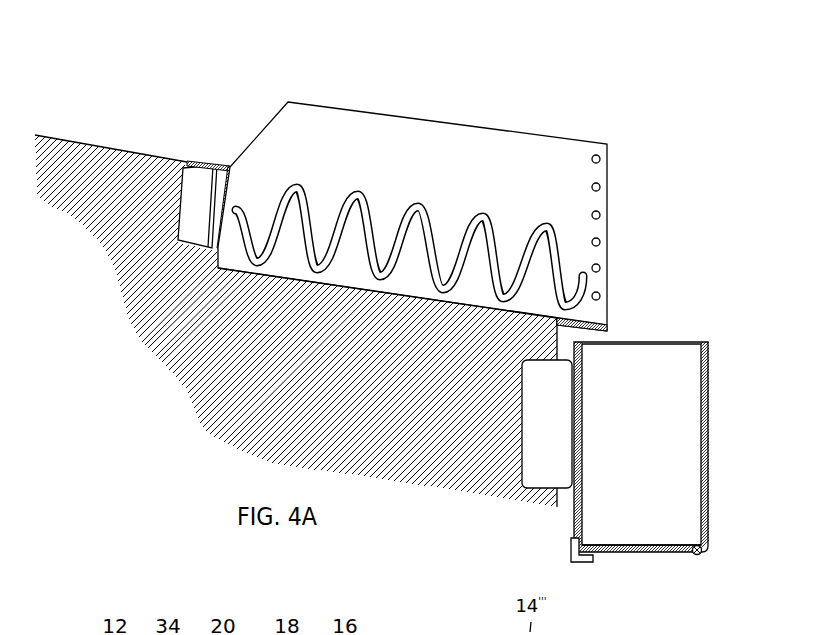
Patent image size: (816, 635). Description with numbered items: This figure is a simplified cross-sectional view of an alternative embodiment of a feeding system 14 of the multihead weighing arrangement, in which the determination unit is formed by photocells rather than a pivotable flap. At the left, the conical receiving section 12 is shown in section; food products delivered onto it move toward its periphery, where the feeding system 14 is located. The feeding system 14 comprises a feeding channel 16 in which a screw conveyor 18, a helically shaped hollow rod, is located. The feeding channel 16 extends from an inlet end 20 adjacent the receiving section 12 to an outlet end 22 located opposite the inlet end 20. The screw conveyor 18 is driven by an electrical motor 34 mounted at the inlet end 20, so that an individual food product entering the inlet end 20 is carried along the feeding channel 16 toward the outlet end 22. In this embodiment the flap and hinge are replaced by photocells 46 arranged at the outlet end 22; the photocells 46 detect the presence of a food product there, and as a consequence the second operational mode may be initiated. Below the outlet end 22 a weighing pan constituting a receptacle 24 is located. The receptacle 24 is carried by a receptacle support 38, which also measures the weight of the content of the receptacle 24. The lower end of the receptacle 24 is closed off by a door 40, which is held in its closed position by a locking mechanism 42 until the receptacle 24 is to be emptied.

The receiving section 12 is at (104, 131).
The feeding system 14 is at (501, 168).
The feeding channel 16 is at (326, 212).
The screw conveyor 18 is at (300, 177).
The inlet end 20 is at (234, 186).
The outlet end 22 is at (597, 312).
The receptacle 24 is at (689, 488).
The electrical motor 34 is at (200, 202).
The receptacle support 38 is at (553, 412).
The door 40 is at (647, 552).
The locking mechanism 42 is at (592, 562).
The photocells 46 is at (602, 159).